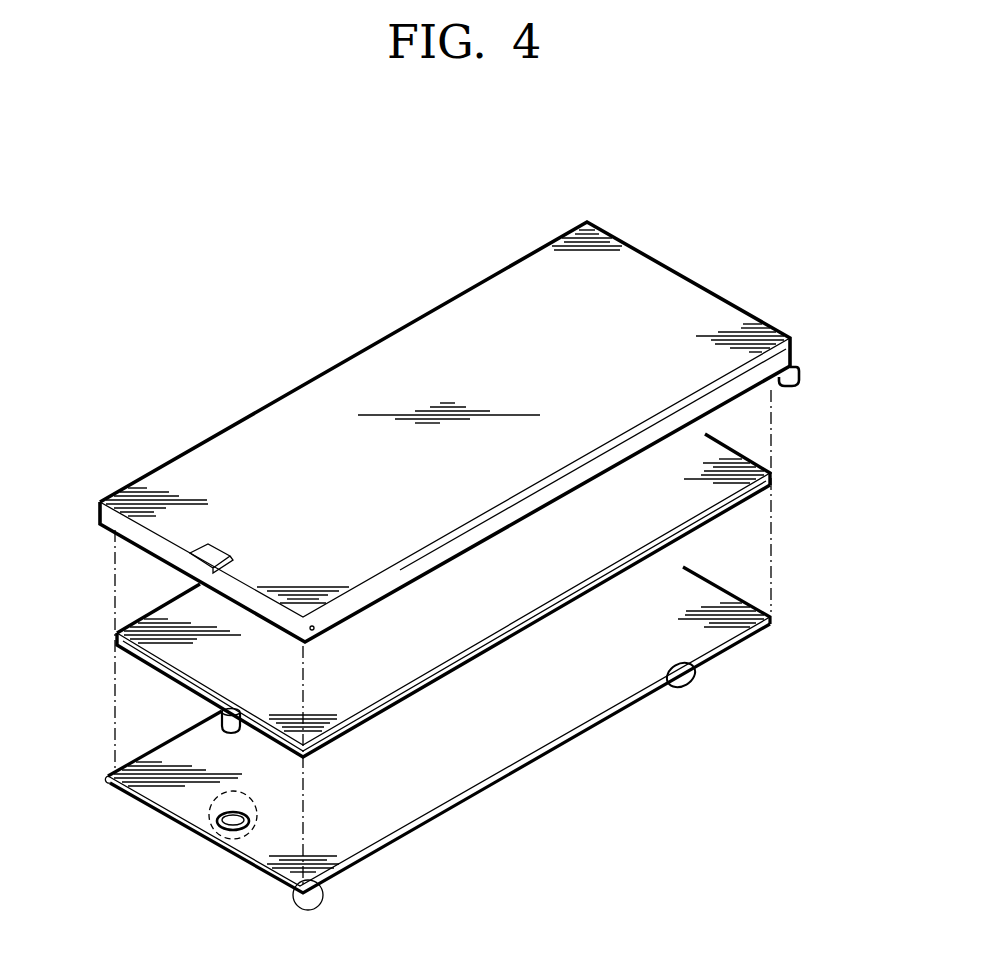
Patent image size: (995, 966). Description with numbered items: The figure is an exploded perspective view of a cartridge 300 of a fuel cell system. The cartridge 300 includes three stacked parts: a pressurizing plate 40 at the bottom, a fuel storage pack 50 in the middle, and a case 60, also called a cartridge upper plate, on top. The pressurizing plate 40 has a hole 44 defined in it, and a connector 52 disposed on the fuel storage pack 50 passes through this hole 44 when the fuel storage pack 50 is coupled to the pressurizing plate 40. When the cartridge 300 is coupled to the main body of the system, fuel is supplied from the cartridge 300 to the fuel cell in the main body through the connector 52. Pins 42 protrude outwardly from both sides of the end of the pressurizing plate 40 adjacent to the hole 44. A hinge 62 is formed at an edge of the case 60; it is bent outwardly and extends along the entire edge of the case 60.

The cartridge 300 is at (321, 330).
The case 60 is at (728, 327).
The hinge 62 is at (800, 381).
The fuel storage pack 50 is at (774, 492).
The connector 52 is at (220, 720).
The pressurizing plate 40 is at (128, 797).
The pins 42 is at (320, 905).
The hole 44 is at (212, 818).